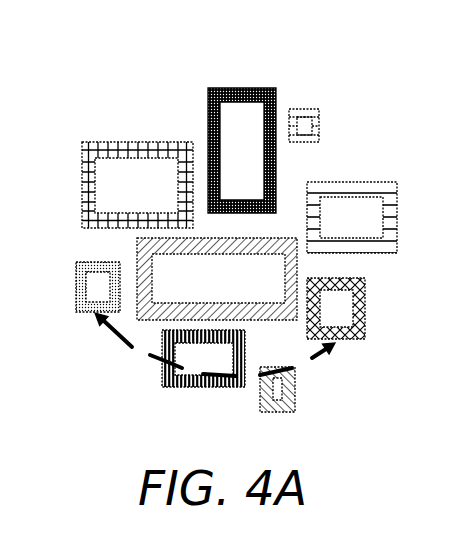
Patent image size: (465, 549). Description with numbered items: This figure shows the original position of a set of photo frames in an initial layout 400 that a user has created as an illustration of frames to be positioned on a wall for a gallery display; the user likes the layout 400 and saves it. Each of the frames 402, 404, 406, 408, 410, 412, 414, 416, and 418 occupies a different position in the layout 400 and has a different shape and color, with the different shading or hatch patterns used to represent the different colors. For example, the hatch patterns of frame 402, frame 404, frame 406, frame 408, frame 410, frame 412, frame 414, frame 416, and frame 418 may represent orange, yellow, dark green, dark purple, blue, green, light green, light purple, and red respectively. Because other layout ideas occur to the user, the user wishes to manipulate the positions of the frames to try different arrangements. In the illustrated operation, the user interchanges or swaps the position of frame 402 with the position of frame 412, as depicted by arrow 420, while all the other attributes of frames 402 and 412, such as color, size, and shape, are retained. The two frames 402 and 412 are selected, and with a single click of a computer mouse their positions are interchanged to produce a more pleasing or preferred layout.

The initial layout 400 is at (334, 49).
The frame 402 is at (77, 265).
The frame 404 is at (80, 163).
The frame 406 is at (240, 88).
The frame 408 is at (319, 123).
The frame 410 is at (397, 215).
The frame 412 is at (365, 315).
The frame 414 is at (293, 388).
The frame 416 is at (183, 392).
The frame 418 is at (140, 317).
The arrow 420 is at (150, 355).